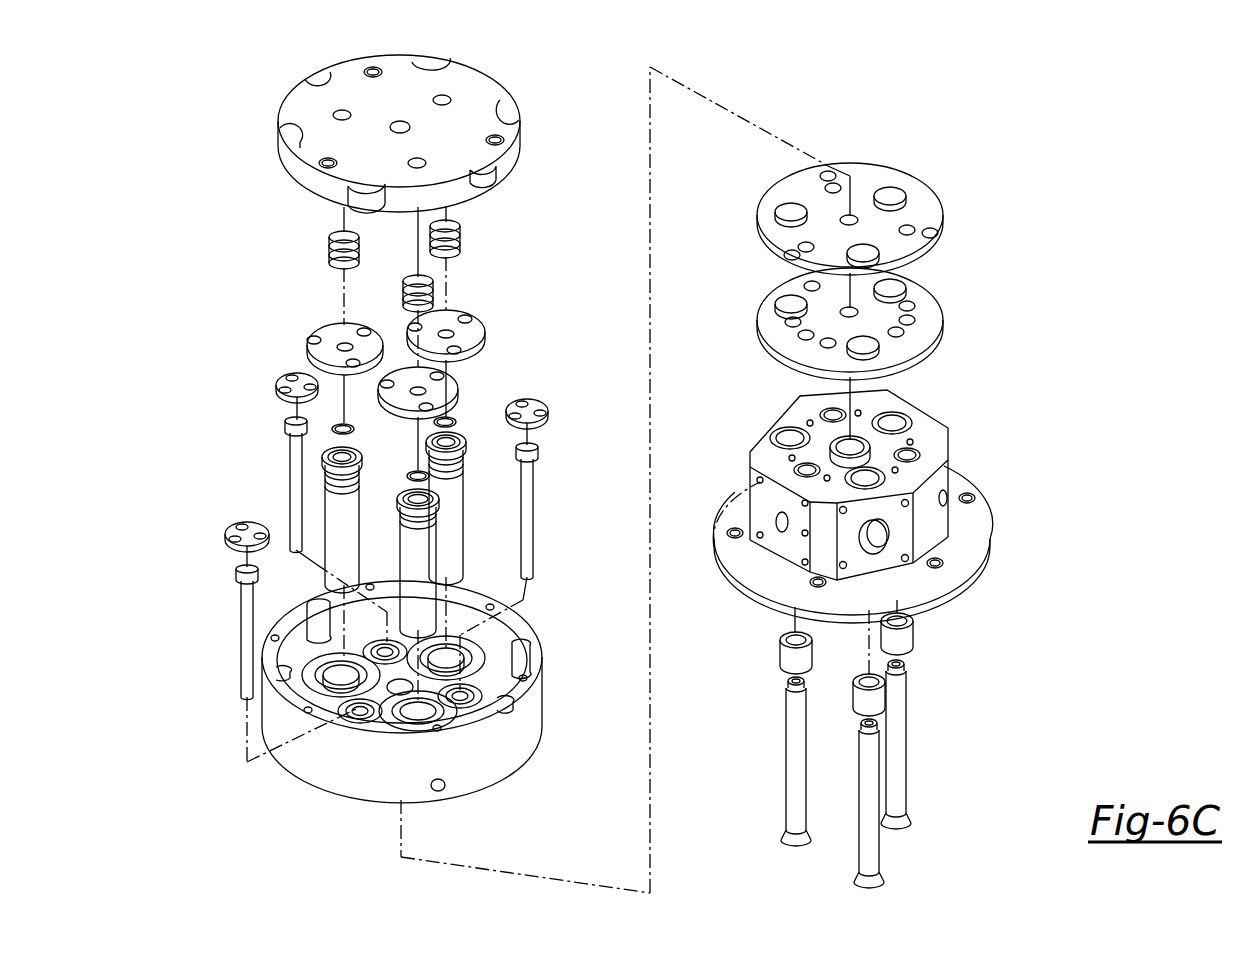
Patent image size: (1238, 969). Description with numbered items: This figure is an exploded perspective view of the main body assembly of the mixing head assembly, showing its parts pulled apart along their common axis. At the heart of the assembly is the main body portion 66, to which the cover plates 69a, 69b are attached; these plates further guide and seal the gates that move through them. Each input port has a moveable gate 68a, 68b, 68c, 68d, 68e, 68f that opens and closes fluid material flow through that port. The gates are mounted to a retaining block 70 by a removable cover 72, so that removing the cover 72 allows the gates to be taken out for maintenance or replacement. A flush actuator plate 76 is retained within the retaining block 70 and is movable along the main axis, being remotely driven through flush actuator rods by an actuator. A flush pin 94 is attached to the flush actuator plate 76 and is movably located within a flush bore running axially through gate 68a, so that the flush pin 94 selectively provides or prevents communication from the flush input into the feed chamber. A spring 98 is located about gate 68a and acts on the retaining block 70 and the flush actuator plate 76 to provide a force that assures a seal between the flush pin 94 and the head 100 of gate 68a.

The flush actuator plate 76 is at (300, 100).
The spring 98 is at (328, 245).
The removable cover 72 is at (328, 333).
The moveable gate 68a is at (355, 497).
The moveable gate 68b is at (460, 500).
The moveable gate 68c is at (402, 572).
The moveable gate 68d is at (288, 462).
The moveable gate 68e is at (535, 545).
The moveable gate 68f is at (238, 618).
The retaining block 70 is at (520, 743).
The cover plate 69a is at (925, 205).
The cover plate 69b is at (925, 302).
The main body portion 66 is at (980, 555).
The head of the gate 100 is at (783, 656).
The flush pin 94 is at (790, 745).